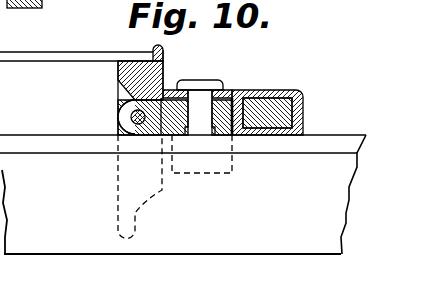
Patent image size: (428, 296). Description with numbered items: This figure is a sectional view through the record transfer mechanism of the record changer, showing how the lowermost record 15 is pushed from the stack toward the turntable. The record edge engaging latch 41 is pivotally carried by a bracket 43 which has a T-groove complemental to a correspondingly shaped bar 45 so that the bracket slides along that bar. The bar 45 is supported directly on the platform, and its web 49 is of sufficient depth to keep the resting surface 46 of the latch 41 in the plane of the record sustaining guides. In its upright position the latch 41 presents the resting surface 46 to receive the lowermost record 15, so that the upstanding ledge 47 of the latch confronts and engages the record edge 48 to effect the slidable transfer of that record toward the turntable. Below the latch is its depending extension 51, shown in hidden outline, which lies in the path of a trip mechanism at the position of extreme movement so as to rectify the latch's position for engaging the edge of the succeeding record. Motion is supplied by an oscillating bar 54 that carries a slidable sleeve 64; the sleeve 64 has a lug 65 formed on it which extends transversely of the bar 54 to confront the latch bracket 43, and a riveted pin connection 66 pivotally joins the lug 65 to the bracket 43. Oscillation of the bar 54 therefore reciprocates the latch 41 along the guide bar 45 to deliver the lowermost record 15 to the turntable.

The record 15 is at (40, 52).
The record edge 48 is at (150, 55).
The upstanding ledge 47 is at (163, 75).
The record edge engaging latch 41 is at (173, 79).
The lug 65 is at (231, 88).
The bracket 43 is at (309, 86).
The oscillating bar 54 is at (296, 92).
The slidable sleeve 64 is at (303, 106).
The resting surface 46 is at (118, 80).
The riveted pin connection 66 is at (200, 118).
The guide bar 45 is at (251, 147).
The web 49 is at (279, 245).
The depending extension 51 is at (133, 206).